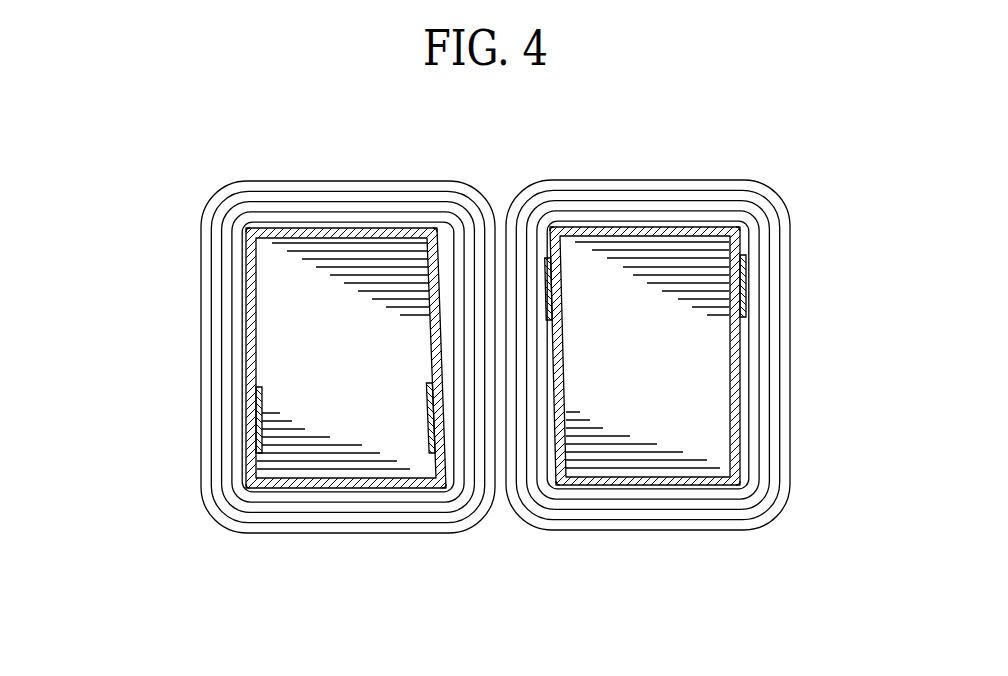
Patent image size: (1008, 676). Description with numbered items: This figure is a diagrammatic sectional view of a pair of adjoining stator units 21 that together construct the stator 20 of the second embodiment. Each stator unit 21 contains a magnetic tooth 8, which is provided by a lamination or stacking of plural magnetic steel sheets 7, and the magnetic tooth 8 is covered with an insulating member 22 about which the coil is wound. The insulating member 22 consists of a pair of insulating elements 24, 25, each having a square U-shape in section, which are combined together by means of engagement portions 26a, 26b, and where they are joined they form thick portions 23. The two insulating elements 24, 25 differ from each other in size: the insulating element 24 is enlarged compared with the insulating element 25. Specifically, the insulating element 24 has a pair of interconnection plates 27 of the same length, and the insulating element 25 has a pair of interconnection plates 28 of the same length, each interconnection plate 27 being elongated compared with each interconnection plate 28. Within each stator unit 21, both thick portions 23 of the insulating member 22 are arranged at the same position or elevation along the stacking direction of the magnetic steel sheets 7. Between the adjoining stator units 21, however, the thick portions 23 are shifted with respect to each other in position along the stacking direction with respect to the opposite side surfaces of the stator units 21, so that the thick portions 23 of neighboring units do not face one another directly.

The magnetic steel sheets 7 is at (715, 242).
The magnetic tooth 8 is at (610, 287).
The stator 20 is at (778, 168).
The stator units 21 is at (292, 553).
The insulating member 22 is at (232, 332).
The thick portions 23 is at (230, 410).
The insulating element 24 is at (338, 228).
The insulating element 25 is at (338, 488).
The engagement portion 26a is at (246, 438).
The engagement portion 26b is at (262, 402).
The interconnection plates 27 is at (447, 278).
The interconnection plates 28 is at (250, 480).